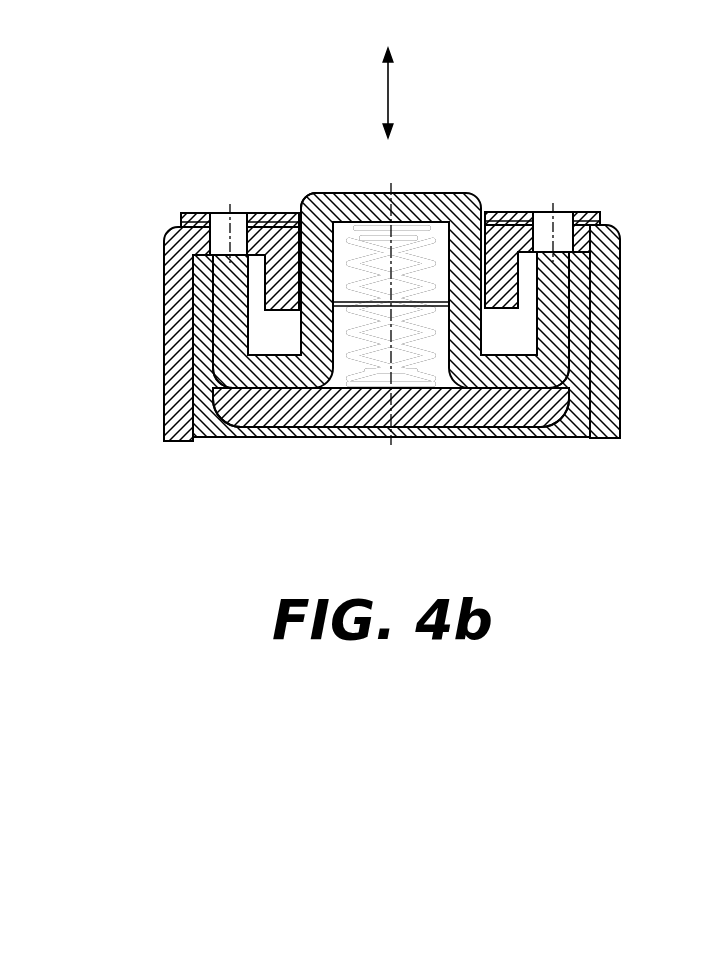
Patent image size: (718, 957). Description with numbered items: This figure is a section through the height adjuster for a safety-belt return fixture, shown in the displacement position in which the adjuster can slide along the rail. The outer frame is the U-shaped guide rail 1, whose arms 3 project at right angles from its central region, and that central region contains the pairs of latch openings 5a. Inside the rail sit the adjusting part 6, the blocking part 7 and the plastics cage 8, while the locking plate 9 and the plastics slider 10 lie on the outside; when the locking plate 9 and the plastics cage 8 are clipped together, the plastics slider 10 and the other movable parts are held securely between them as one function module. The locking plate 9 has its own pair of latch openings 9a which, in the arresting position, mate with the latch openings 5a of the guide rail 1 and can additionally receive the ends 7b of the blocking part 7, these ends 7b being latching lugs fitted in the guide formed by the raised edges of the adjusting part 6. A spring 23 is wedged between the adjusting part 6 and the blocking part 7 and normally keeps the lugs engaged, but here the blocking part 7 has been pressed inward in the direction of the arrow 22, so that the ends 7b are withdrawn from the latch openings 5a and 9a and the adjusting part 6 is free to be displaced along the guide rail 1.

The guide rail 1 is at (398, 266).
The arms 3 is at (426, 333).
The latch openings 5a is at (617, 274).
The adjusting part 6 is at (340, 413).
The blocking part 7 is at (338, 248).
The ends of the blocking part 7b is at (220, 288).
The plastics cage 8 is at (557, 427).
The locking plate 9 is at (562, 216).
The latch openings of the locking plate 9a is at (567, 210).
The plastics slider 10 is at (181, 228).
The arrow 22 is at (389, 97).
The spring 23 is at (333, 194).